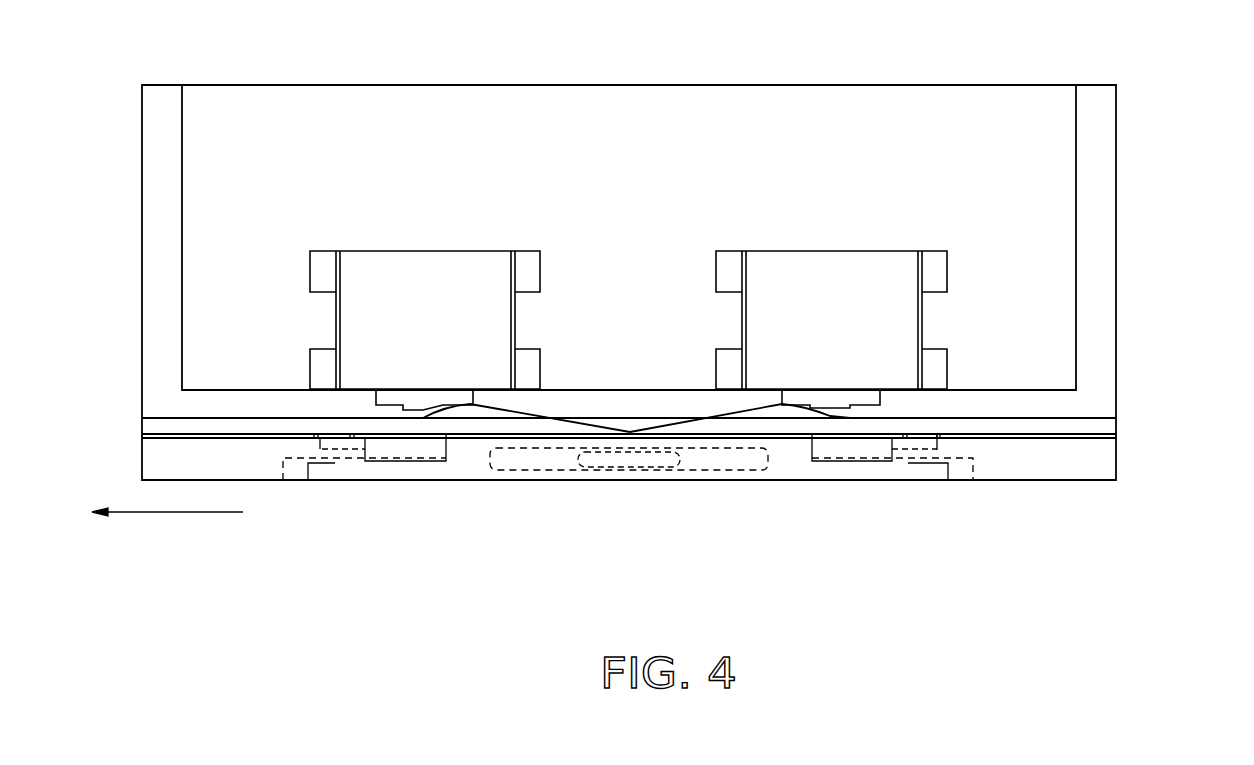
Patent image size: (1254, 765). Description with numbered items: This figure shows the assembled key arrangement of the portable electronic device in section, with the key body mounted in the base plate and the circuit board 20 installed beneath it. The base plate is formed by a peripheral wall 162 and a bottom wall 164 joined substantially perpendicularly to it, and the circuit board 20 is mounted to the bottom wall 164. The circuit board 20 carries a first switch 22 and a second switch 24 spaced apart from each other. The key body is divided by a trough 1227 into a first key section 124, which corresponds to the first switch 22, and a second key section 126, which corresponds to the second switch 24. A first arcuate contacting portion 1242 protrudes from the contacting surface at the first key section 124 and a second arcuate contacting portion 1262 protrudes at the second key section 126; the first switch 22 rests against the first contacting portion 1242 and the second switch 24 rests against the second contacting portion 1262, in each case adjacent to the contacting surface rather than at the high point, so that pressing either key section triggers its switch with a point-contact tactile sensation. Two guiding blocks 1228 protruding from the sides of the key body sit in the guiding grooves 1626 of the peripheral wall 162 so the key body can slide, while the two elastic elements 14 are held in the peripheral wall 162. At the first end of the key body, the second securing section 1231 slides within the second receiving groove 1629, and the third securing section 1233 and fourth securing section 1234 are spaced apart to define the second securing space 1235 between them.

The circuit board 20 is at (976, 143).
The first switch 22 is at (405, 398).
The second switch 24 is at (835, 399).
The elastic element 14 is at (385, 458).
The first key section 124 is at (465, 462).
The second key section 126 is at (738, 468).
The peripheral wall 162 is at (1097, 463).
The bottom wall 164 is at (1100, 232).
The trough 1227 is at (632, 470).
The guiding block 1228 is at (592, 462).
The second securing section 1231 is at (330, 466).
The third securing section 1233 is at (1083, 425).
The fourth securing section 1234 is at (905, 465).
The second securing space 1235 is at (855, 470).
The first arcuate contacting portion 1242 is at (485, 420).
The second arcuate contacting portion 1262 is at (788, 417).
The guiding groove 1626 is at (520, 460).
The second receiving groove 1629 is at (283, 472).